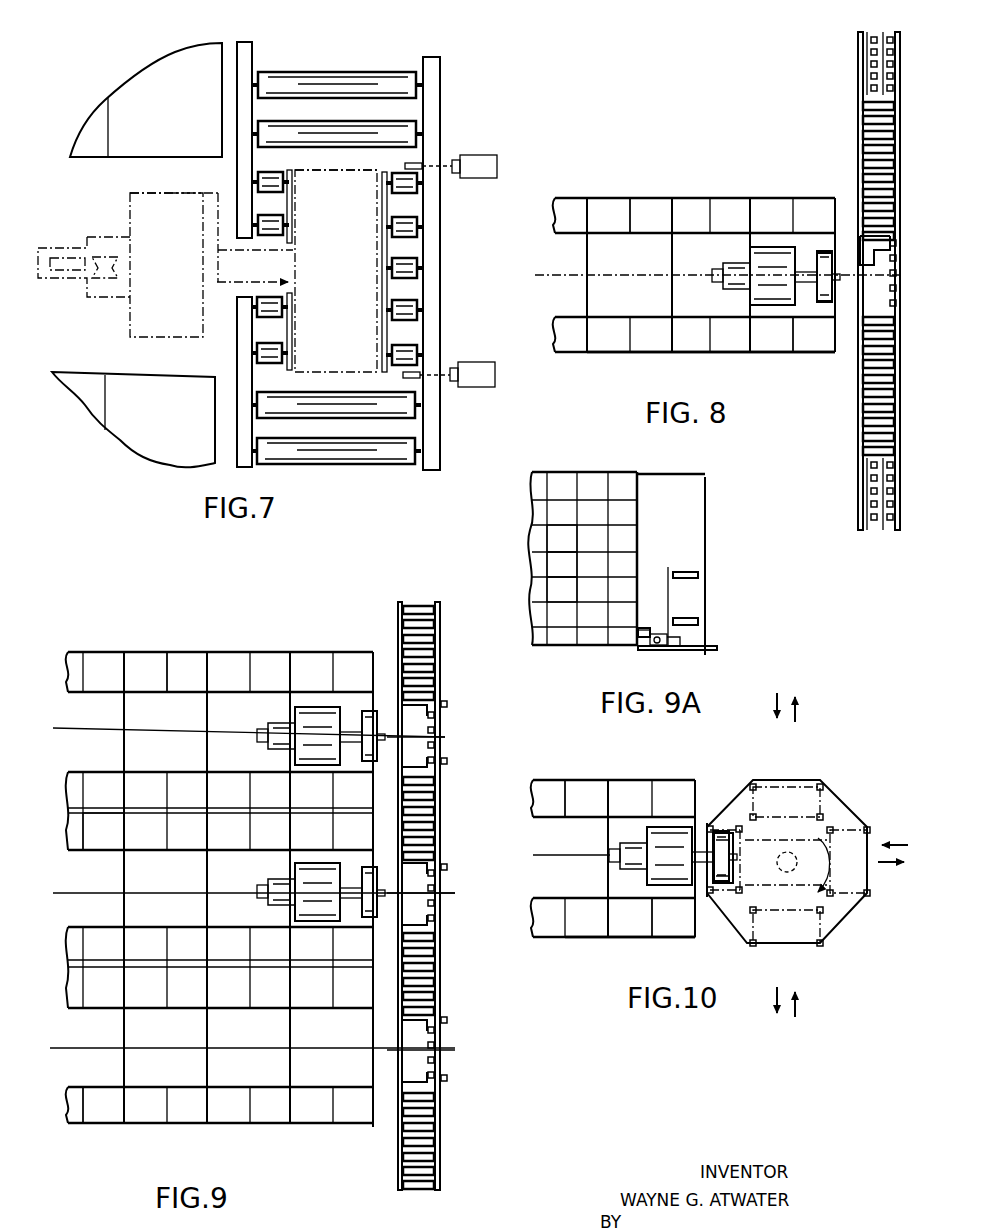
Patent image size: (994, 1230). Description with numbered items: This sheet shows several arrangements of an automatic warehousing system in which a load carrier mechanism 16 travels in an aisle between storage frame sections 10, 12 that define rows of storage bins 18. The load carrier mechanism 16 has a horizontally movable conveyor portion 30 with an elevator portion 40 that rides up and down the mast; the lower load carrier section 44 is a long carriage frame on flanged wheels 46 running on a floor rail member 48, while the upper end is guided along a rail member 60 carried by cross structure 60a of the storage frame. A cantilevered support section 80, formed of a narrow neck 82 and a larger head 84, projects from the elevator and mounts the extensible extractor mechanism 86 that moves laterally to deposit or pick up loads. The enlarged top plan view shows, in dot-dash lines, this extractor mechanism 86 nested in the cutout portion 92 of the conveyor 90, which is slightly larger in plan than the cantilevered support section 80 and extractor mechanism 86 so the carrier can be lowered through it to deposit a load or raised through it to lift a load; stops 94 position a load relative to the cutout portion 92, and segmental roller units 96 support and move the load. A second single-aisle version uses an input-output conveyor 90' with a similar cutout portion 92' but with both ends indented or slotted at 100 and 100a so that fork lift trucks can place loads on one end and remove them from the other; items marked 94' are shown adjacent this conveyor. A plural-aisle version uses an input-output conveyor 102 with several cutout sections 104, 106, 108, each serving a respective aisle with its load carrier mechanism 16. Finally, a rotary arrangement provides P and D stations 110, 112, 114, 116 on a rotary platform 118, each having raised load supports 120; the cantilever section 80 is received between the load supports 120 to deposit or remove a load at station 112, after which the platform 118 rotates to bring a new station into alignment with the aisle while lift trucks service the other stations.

In FIG. 7, the storage frame section 10 is at (139, 78).
In FIG. 8, the storage frame section 10 is at (681, 195).
In FIG. 10, the storage frame section 10 is at (621, 777).
In FIG. 9, the storage frame section 10 is at (236, 648).
In FIG. 7, the storage frame section 12 is at (134, 431).
In FIG. 8, the storage frame section 12 is at (673, 359).
In FIG. 9A, the storage frame section 12 is at (599, 470).
In FIG. 10, the storage frame section 12 is at (593, 940).
In FIG. 9, the storage frame section 12 is at (233, 1127).
In FIG. 7, the load carrier mechanism 16 is at (177, 190).
In FIG. 8, the load carrier mechanism 16 is at (773, 238).
In FIG. 10, the load carrier mechanism 16 is at (672, 818).
In FIG. 9, the load carrier mechanism 16 is at (278, 868).
In FIG. 8, the storage bins 18 is at (609, 205).
In FIG. 9A, the storage bins 18 is at (553, 585).
In FIG. 10, the storage bins 18 is at (585, 790).
In FIG. 9, the storage bins 18 is at (185, 660).
In FIG. 7, the horizontally movable conveyor portion 30 is at (150, 190).
In FIG. 7, the elevator portion 40 is at (210, 246).
In FIG. 9A, the lower load carrier section 44 is at (651, 650).
In FIG. 9A, the flanged wheels 46 is at (683, 648).
In FIG. 9A, the rail member 48 is at (714, 648).
In FIG. 8, the rail member 60 is at (648, 280).
In FIG. 9A, the rail member 60 is at (684, 476).
In FIG. 9, the rail member 60 is at (101, 732).
In FIG. 9, the cross structure 60a is at (285, 1045).
In FIG. 7, the cantilevered support section 80 is at (258, 282).
In FIG. 9A, the cantilevered support section 80 is at (637, 636).
In FIG. 10, the cantilevered support section 80 is at (711, 901).
In FIG. 7, the neck 82 is at (206, 305).
In FIG. 10, the neck 82 is at (700, 862).
In FIG. 7, the head 84 is at (367, 169).
In FIG. 7, the extractor mechanism 86 is at (405, 252).
In FIG. 9A, the extractor mechanism 86 is at (642, 627).
In FIG. 10, the extractor mechanism 86 is at (722, 830).
In FIG. 7, the conveyor 90 is at (370, 256).
In FIG. 9A, the conveyor 90 is at (709, 590).
In FIG. 9, the conveyor 90 is at (419, 896).
In FIG. 8, the input-output conveyor 90' is at (856, 281).
In FIG. 7, the cutout portion 92 is at (336, 249).
In FIG. 8, the cutout portion 92' is at (837, 288).
In FIG. 7, the stops 94 is at (460, 270).
In FIG. 8, the stops 94 is at (861, 247).
In FIG. 8, the carriage followers 94' is at (903, 293).
In FIG. 9, the carriage followers 94' is at (469, 885).
In FIG. 7, the segmental roller units 96 is at (270, 226).
In FIG. 8, the indented or slotted end 100 is at (862, 33).
In FIG. 8, the indented or slotted end 100a is at (884, 531).
In FIG. 9, the input-output conveyor 102 is at (448, 761).
In FIG. 9, the cutout section 104 is at (416, 729).
In FIG. 9, the cutout section 106 is at (414, 890).
In FIG. 9, the cutout section 108 is at (414, 1046).
In FIG. 10, the P and D station 110 is at (790, 787).
In FIG. 10, the P and D station 112 is at (742, 878).
In FIG. 10, the P and D station 114 is at (798, 941).
In FIG. 10, the P and D station 116 is at (858, 868).
In FIG. 10, the rotary platform 118 is at (842, 810).
In FIG. 10, the raised load supports 120 is at (820, 815).